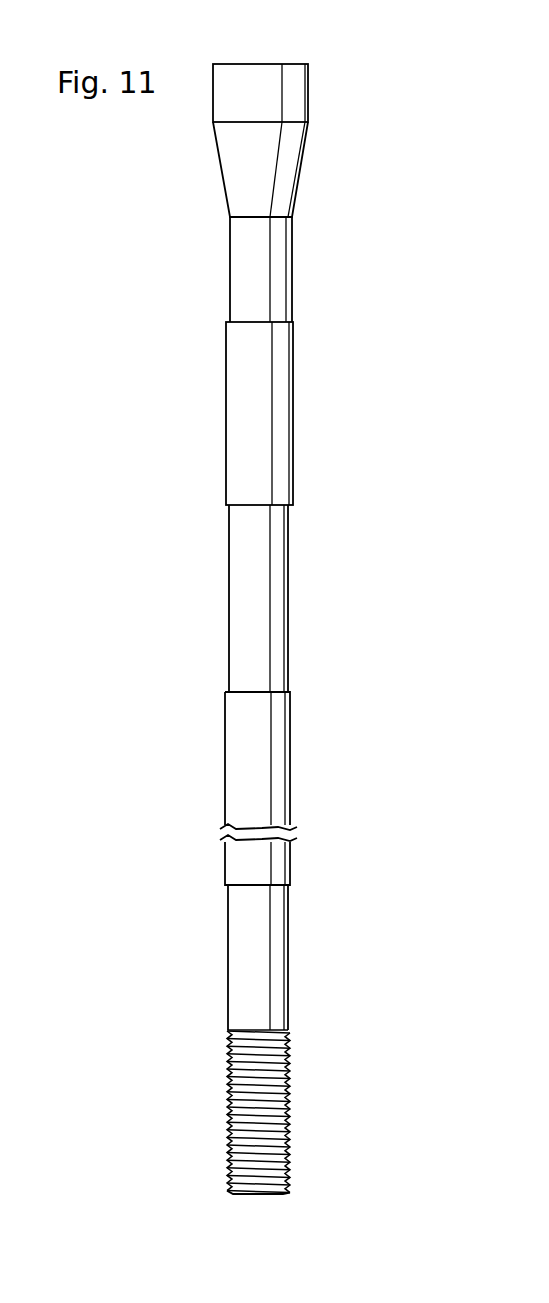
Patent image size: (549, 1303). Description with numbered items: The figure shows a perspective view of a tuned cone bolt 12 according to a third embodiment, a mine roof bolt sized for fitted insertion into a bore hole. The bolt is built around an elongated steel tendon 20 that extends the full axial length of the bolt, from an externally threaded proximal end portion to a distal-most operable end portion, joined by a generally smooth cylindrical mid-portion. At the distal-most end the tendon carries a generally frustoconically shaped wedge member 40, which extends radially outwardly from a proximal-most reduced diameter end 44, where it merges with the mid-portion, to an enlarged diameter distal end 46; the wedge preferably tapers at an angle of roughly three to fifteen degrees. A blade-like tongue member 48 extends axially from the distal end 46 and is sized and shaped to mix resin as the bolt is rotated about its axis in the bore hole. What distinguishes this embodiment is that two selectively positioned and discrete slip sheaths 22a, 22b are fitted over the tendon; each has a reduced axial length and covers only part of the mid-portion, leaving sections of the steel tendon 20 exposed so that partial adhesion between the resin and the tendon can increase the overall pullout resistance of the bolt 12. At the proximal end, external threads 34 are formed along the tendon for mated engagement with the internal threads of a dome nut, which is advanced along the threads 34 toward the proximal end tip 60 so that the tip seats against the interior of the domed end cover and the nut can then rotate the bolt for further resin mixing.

The cone bolt 12 is at (286, 636).
The steel tendon 20 is at (238, 608).
The slip sheath 22a is at (287, 423).
The slip sheath 22b is at (272, 755).
The external threads 34 is at (288, 1094).
The wedge member 40 is at (295, 193).
The proximal-most reduced diameter end 44 is at (287, 217).
The enlarged diameter distal end 46 is at (287, 124).
The tongue member 48 is at (293, 92).
The proximal end tip 60 is at (267, 1193).